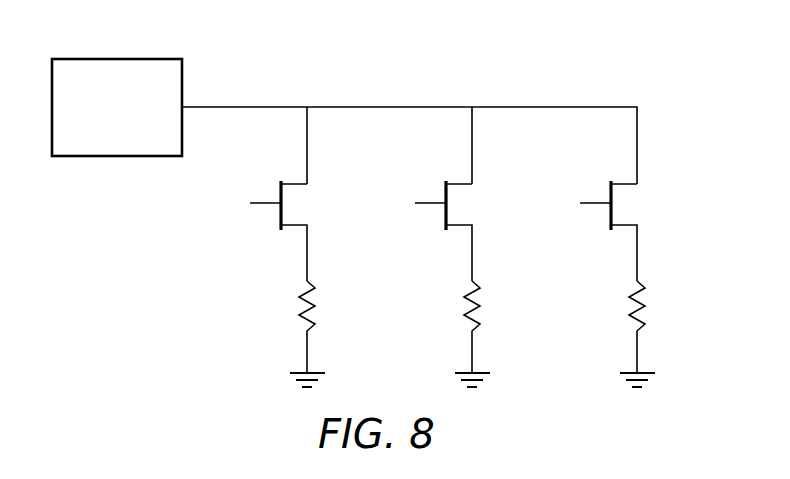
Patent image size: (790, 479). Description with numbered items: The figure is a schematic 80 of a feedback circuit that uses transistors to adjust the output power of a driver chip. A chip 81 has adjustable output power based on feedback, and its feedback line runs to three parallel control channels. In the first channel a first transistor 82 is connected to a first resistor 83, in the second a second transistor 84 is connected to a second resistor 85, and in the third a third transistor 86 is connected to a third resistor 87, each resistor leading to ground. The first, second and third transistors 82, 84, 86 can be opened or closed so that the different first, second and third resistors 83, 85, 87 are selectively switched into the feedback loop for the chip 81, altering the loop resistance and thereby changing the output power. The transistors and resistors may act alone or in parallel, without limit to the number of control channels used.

The schematic 80 is at (588, 72).
The chip 81 is at (72, 59).
The transistor Q1 82 is at (303, 204).
The resistor R1 83 is at (313, 298).
The transistor Q2 84 is at (468, 204).
The resistor R2 85 is at (478, 298).
The transistor Q3 86 is at (633, 204).
The resistor R3 87 is at (643, 298).